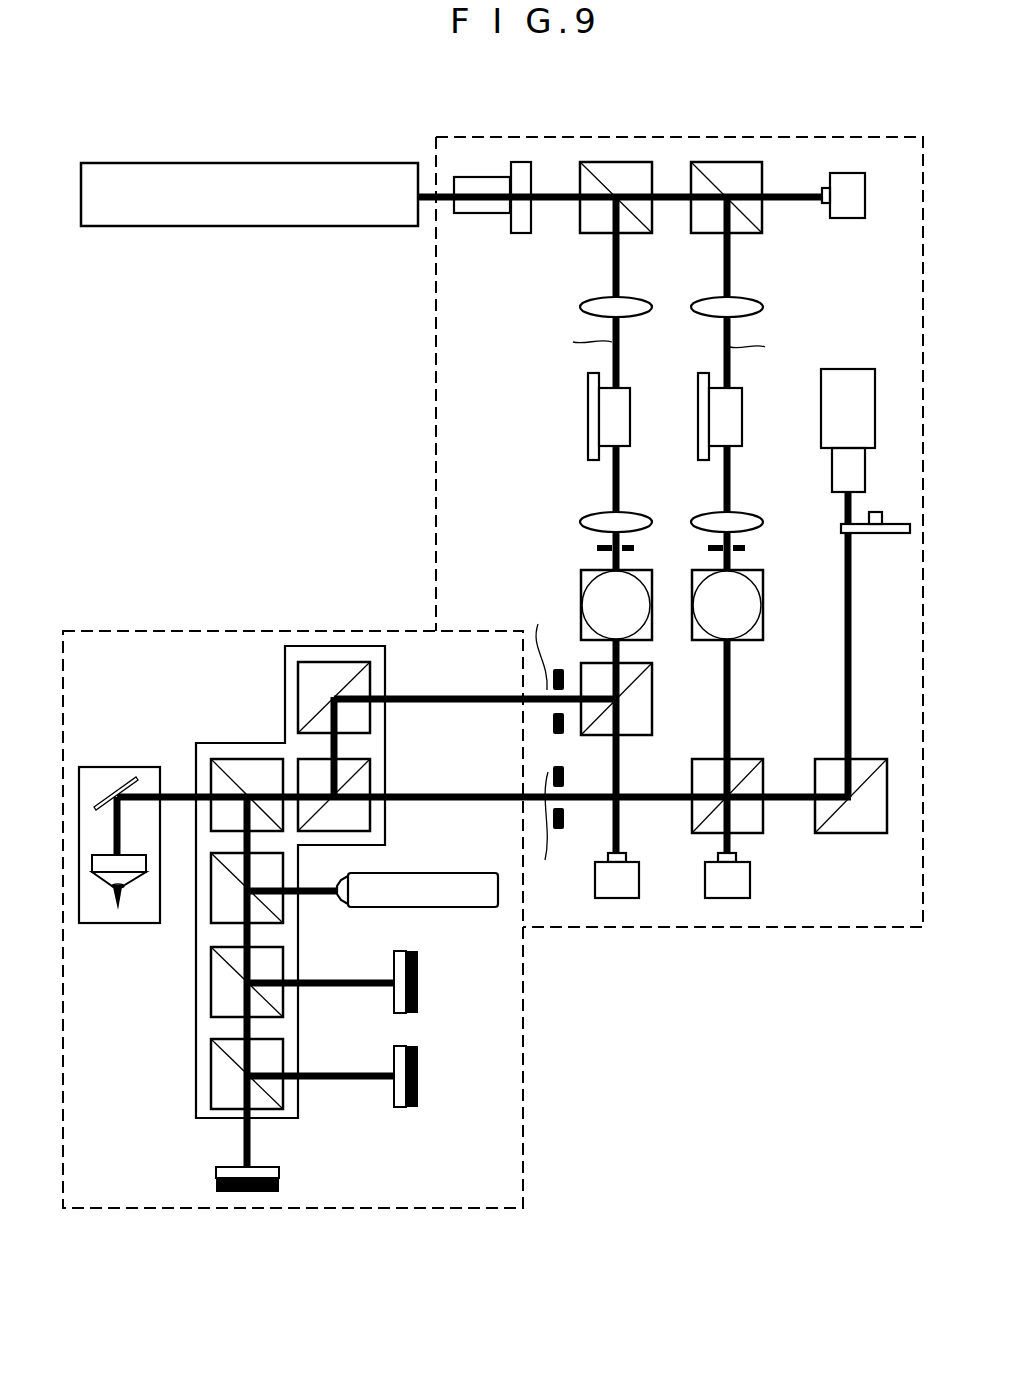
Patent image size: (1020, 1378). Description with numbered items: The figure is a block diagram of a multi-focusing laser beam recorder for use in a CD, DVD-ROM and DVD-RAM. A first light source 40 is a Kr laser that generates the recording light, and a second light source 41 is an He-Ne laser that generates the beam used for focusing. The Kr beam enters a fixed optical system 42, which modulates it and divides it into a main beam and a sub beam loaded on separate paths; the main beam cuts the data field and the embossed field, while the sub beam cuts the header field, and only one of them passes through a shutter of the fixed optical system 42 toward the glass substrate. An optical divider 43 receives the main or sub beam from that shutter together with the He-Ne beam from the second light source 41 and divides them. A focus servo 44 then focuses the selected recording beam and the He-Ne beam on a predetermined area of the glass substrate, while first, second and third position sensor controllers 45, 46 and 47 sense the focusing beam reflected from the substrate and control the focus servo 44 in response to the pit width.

The first light source 40 is at (253, 228).
The second light source 41 is at (453, 873).
The fixed optical system 42 is at (667, 928).
The optical divider 43 is at (323, 645).
The focus servo 44 is at (110, 924).
The first position sensor controller 45 is at (279, 1186).
The second position sensor controller 46 is at (418, 1079).
The third position sensor controller 47 is at (418, 992).